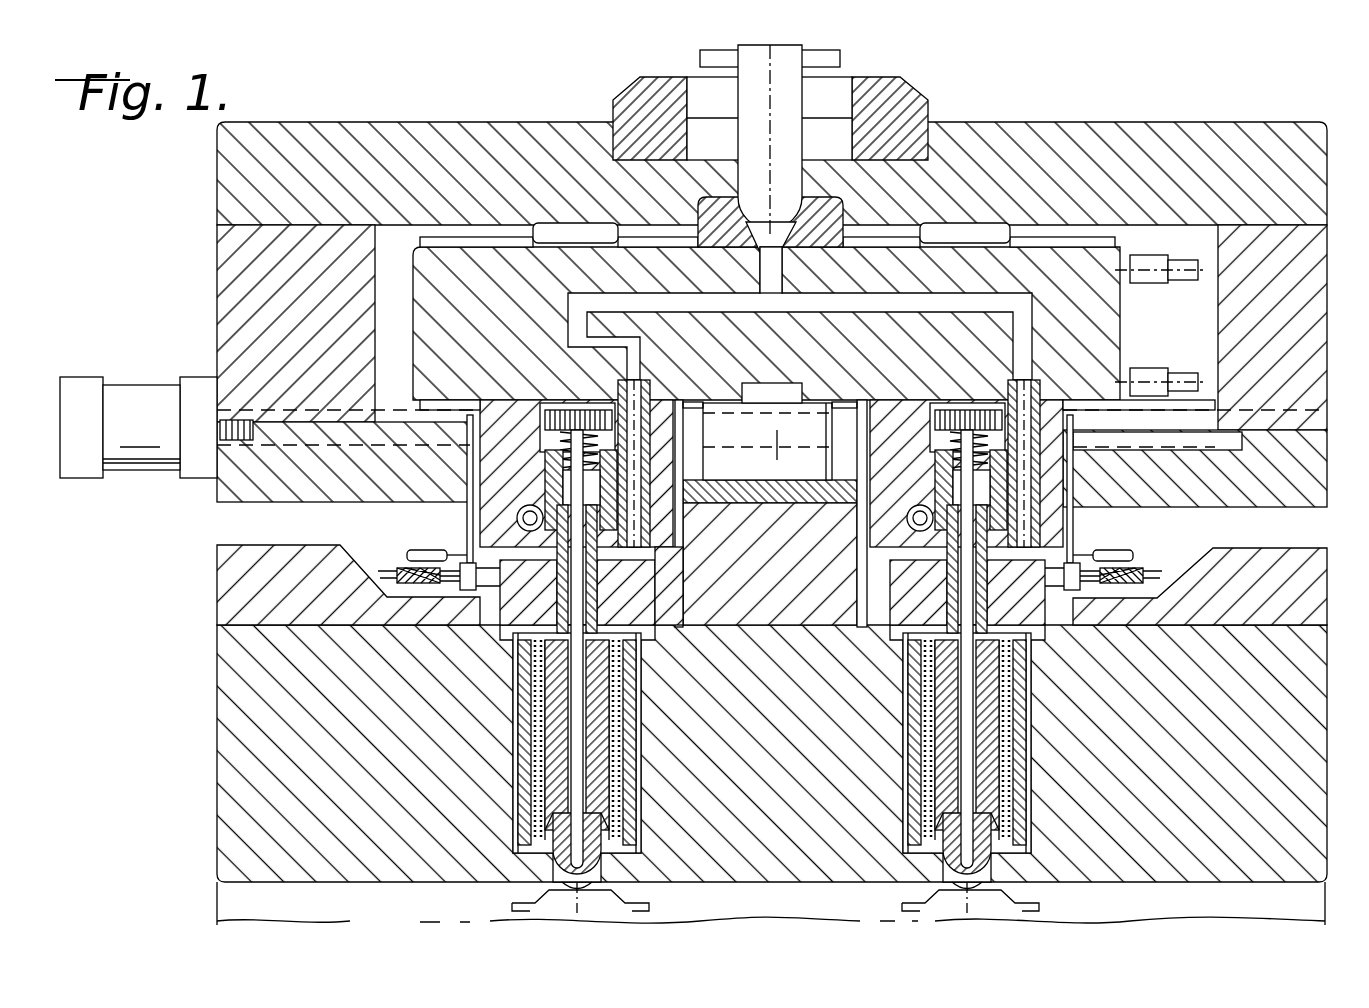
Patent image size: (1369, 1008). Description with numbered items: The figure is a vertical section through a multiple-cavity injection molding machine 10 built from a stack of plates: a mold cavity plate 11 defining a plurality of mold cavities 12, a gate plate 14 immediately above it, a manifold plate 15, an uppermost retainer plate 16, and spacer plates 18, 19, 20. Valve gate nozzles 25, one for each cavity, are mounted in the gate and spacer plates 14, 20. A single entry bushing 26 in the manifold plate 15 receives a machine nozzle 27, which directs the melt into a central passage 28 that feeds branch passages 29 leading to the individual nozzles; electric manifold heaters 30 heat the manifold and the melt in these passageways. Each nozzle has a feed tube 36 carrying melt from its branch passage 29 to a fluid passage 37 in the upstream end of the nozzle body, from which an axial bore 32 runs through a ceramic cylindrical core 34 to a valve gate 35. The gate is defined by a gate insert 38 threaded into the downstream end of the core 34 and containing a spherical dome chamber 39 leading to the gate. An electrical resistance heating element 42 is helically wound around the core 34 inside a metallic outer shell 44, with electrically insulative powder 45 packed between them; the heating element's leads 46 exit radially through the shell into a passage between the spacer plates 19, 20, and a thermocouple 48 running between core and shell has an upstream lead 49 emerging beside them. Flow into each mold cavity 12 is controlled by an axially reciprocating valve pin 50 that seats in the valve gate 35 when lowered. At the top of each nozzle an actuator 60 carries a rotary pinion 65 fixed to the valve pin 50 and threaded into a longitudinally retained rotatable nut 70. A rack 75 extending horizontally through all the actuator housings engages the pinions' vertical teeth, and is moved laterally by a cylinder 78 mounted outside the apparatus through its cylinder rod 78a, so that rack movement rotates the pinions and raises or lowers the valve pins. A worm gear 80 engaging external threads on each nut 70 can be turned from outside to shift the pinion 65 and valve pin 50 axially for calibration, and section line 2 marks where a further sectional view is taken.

The multiple-cavity injection molding machine 10 is at (552, 110).
The mold cavity plate 11 is at (1325, 905).
The mold cavities 12 is at (645, 906).
The gate plate 14 is at (1300, 715).
The manifold plate 15 is at (1062, 262).
The retainer plate 16 is at (1327, 140).
The spacer plate 18 is at (1318, 255).
The spacer plate 19 is at (1320, 450).
The spacer plate 20 is at (1318, 570).
The valve gate nozzles 25 is at (630, 715).
The entry bushing 26 is at (738, 195).
The machine nozzle 27 is at (840, 85).
The central passage 28 is at (790, 285).
The branch passages 29 is at (590, 293).
The electric manifold heaters 30 is at (1160, 290).
The axial bore 32 is at (570, 735).
The cylindrical core 34 is at (615, 770).
The valve gate 35 is at (545, 868).
The feed tube 36 is at (650, 378).
The fluid passage 37 is at (683, 600).
The gate insert 38 is at (610, 865).
The spherical dome chamber 39 is at (600, 835).
The electrical resistance heating element 42 is at (535, 745).
The outer shell 44 is at (525, 815).
The electrically insulative powder 45 is at (535, 775).
The leads 46 is at (397, 572).
The thermocouple 48 is at (512, 637).
The upstream lead 49 is at (427, 550).
The valve pin 50 is at (615, 690).
The actuator 60 is at (510, 395).
The rotary pinion 65 is at (577, 405).
The rotatable nut 70 is at (546, 471).
The rack 75 is at (335, 405).
The cylinder 78 is at (125, 487).
The cylinder rod 78a is at (233, 372).
The worm gear 80 is at (517, 515).
The section line 2 is at (458, 445).